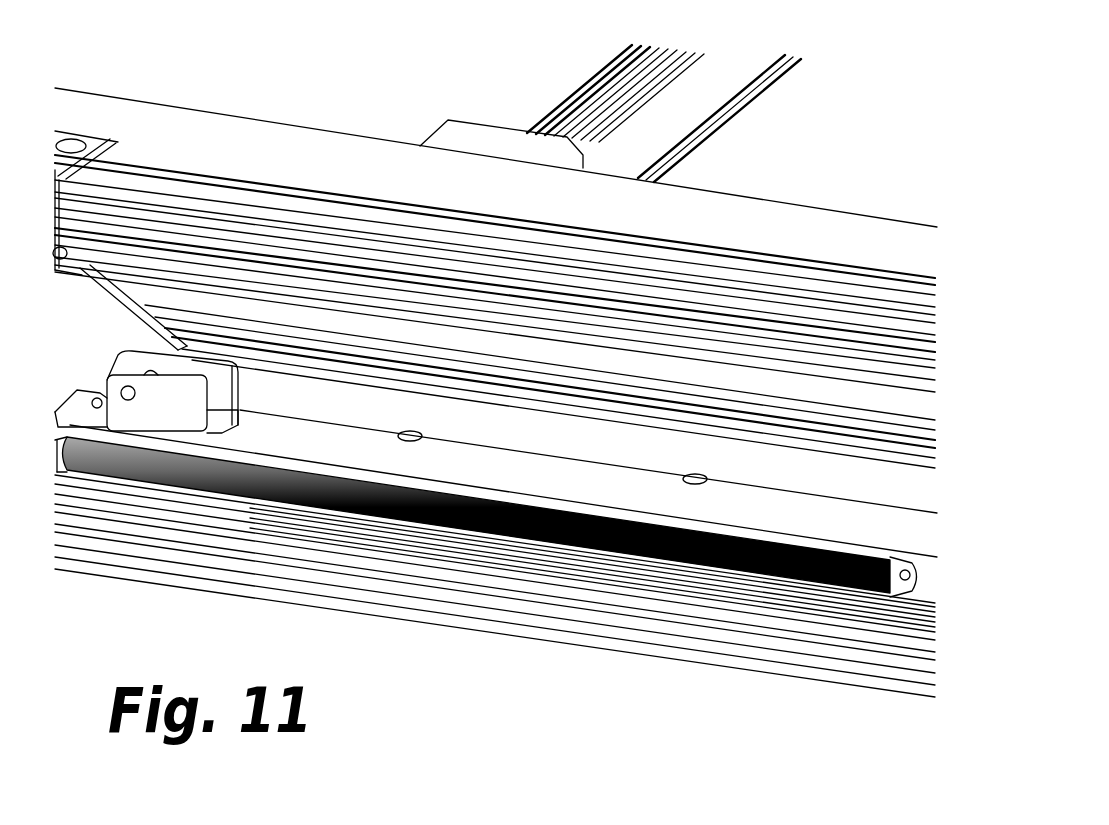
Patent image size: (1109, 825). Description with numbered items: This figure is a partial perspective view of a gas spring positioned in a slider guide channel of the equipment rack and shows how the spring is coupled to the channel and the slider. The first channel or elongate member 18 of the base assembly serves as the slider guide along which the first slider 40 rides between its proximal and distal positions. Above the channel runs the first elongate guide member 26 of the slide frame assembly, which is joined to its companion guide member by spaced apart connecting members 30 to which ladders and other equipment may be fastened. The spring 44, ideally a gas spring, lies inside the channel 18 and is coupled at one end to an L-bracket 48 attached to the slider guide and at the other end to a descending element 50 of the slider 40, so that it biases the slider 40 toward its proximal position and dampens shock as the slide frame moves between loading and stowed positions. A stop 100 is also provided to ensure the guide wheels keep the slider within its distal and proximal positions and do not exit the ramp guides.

The first channel or elongate member 18 is at (360, 527).
The first elongate guide member 26 is at (262, 127).
The connecting members 30 is at (547, 117).
The first slider 40 is at (603, 477).
The spring 44 is at (573, 537).
The L-bracket 48 is at (913, 593).
The descending element 50 is at (57, 455).
The stop 100 is at (100, 330).